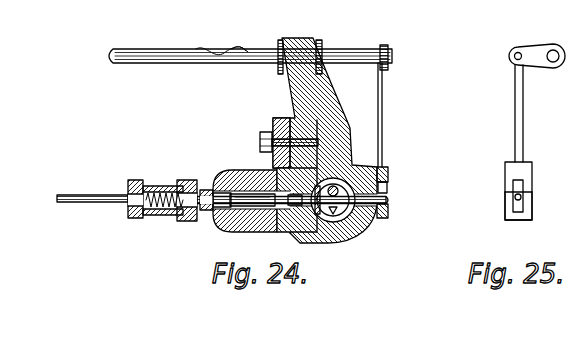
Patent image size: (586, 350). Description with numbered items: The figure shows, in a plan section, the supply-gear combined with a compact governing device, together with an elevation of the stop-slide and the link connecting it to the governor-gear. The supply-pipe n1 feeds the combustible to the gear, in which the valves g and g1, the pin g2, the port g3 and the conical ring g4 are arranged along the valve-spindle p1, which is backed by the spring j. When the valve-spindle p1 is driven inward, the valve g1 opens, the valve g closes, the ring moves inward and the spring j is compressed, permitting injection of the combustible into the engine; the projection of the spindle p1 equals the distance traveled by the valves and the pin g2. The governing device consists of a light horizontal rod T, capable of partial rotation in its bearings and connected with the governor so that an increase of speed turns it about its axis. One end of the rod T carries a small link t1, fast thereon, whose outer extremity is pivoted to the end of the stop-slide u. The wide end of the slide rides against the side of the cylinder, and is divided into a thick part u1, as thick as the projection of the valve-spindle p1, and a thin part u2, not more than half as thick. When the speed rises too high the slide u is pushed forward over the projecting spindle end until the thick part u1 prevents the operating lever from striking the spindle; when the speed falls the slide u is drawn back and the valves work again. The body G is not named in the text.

In FIG. 24, the horizontal rod T is at (162, 62).
In FIG. 25, the horizontal rod T is at (552, 64).
In FIG. 24, the link t1 is at (391, 53).
In FIG. 25, the link t1 is at (541, 50).
In FIG. 24, the stop-slide u is at (384, 107).
In FIG. 25, the stop-slide u is at (523, 110).
In FIG. 24, the thick part of stop-slide u1 is at (389, 183).
In FIG. 25, the thick part of stop-slide u1 is at (518, 191).
In FIG. 24, the thin part of stop-slide u2 is at (381, 208).
In FIG. 25, the thin part of stop-slide u2 is at (532, 203).
In FIG. 24, the valve-spindle p1 is at (389, 199).
In FIG. 25, the valve-spindle p1 is at (517, 199).
In FIG. 24, the supply-pipe n1 is at (70, 192).
In FIG. 24, the spring j is at (150, 190).
In FIG. 24, the body G is at (244, 181).
In FIG. 24, the valve g is at (208, 212).
In FIG. 24, the valve g1 is at (279, 213).
In FIG. 24, the pin g2 is at (244, 213).
In FIG. 24, the port g3 is at (216, 210).
In FIG. 24, the conical ring g4 is at (318, 190).